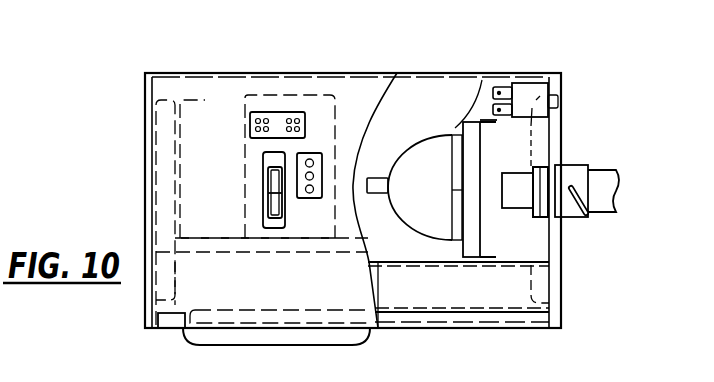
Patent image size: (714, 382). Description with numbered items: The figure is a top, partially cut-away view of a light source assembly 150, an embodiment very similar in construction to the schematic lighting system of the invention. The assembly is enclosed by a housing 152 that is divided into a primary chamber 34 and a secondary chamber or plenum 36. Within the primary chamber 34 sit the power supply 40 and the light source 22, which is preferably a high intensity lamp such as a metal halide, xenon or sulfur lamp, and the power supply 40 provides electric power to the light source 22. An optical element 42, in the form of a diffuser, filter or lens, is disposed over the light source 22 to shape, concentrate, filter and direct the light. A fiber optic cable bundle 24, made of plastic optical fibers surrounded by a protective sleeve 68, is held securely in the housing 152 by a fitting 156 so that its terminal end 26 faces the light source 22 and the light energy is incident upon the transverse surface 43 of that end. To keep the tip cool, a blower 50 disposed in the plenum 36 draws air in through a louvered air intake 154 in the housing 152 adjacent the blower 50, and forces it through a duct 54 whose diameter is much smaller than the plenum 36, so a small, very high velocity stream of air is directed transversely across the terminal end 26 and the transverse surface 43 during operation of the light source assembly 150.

The light source assembly 150 is at (122, 80).
The housing 152 is at (146, 112).
The power supply 40 is at (200, 200).
The louvered air intake 154 is at (210, 338).
The primary chamber 34 is at (425, 92).
The light source 22 is at (426, 145).
The optical element 42 is at (482, 80).
The transverse surface 43 is at (503, 180).
The terminal end 26 is at (508, 220).
The fitting 156 is at (572, 165).
The fiber optic cable bundle 24 is at (605, 164).
The protective sleeve 68 is at (606, 215).
The blower 50 is at (371, 286).
The duct 54 is at (512, 268).
The plenum 36 is at (450, 290).